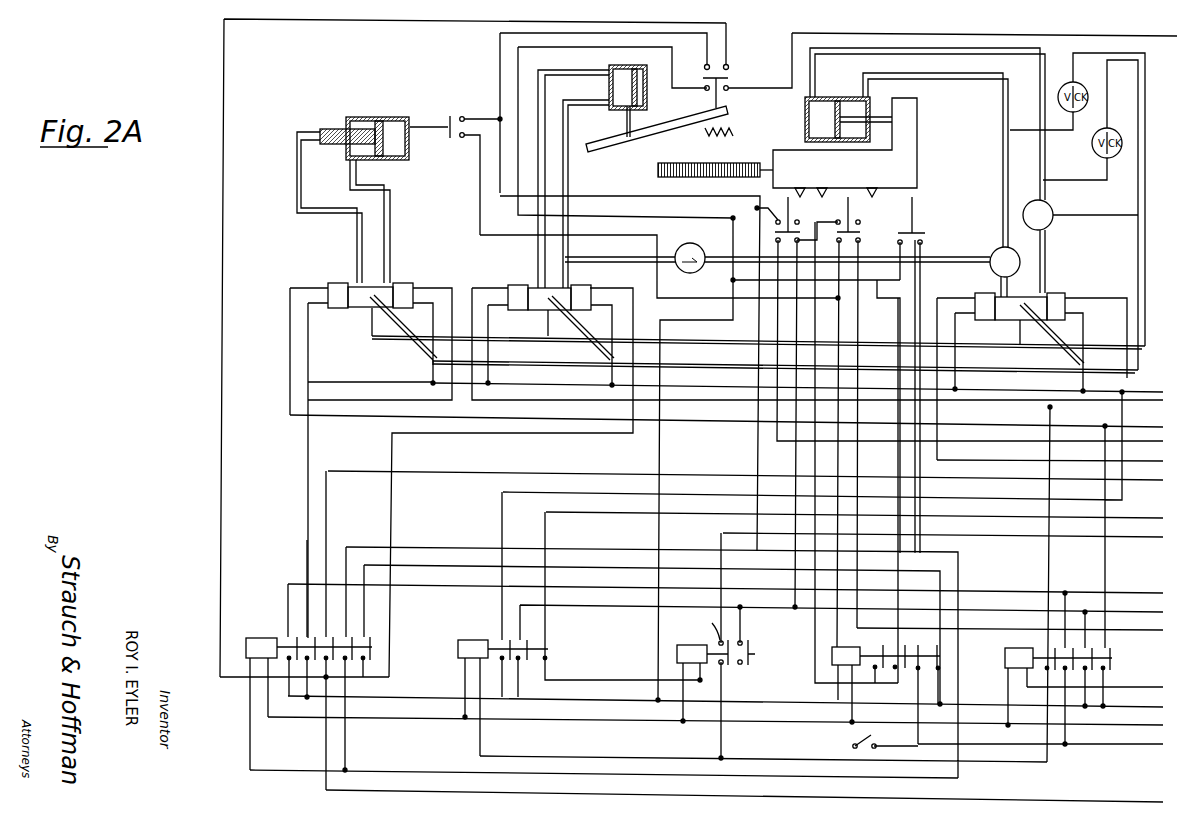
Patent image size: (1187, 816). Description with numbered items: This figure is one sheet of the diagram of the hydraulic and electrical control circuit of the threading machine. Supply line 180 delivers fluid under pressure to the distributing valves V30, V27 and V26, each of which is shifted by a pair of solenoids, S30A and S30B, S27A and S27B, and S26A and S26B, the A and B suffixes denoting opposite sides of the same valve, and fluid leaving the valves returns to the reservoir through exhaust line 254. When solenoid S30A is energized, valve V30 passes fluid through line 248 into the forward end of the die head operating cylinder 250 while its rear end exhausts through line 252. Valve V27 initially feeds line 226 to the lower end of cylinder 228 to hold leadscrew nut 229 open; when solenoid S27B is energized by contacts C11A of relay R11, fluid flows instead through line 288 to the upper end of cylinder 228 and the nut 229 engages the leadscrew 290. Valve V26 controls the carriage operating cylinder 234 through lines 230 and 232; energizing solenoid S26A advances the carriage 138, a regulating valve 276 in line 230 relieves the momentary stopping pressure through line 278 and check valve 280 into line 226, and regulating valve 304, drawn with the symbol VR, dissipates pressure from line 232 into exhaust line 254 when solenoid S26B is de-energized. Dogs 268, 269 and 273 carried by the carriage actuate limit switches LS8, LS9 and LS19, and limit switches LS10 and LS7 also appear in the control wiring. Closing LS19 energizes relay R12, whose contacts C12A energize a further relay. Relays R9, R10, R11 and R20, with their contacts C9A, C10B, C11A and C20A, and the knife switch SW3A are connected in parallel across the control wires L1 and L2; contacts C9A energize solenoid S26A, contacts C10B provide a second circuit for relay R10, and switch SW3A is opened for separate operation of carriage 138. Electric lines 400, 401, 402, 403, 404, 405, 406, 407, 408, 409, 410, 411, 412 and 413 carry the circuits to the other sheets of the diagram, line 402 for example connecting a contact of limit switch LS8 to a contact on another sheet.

The line 248 is at (297, 165).
The die head operating cylinder 250 is at (360, 117).
The line 252 is at (390, 194).
The limit switch LS10 is at (452, 114).
The line 288 is at (652, 66).
The leadscrew nut operating cylinder 228 is at (585, 179).
The line 226 is at (569, 105).
The leadscrew nut 229 is at (733, 135).
The limit switch LS7 is at (728, 78).
The line 232 is at (868, 52).
The carriage operating cylinder 234 is at (805, 120).
The line 230 is at (974, 78).
The carriage 138 is at (912, 125).
The leadscrew 290 is at (658, 172).
The dog 268 is at (792, 182).
The dog 269 is at (824, 188).
The dog 273 is at (868, 190).
The limit switch LS8 is at (797, 224).
The limit switch LS9 is at (858, 225).
The limit switch LS19 is at (915, 228).
The line 278 is at (833, 266).
The check valve 280 is at (680, 246).
The regulating valve 276 is at (995, 255).
The relief valve VR is at (1080, 222).
The regulating valve 304 is at (1047, 224).
The electric line 403 is at (1132, 33).
The distributing valve V30 is at (368, 438).
The solenoid S30A is at (338, 283).
The solenoid S30B is at (400, 283).
The distributing valve V27 is at (776, 459).
The solenoid S27B is at (516, 286).
The solenoid S27A is at (580, 285).
The distributing valve V26 is at (1032, 357).
The solenoid S26B is at (988, 298).
The solenoid S26A is at (1058, 298).
The exhaust line 254 is at (421, 346).
The supply line 180 is at (368, 326).
The wire L2 is at (1122, 392).
The wire L1 is at (1122, 707).
The electric line 400 is at (1118, 410).
The electric line 401 is at (1118, 427).
The electric line 402 is at (1118, 443).
The electric line 404 is at (1118, 461).
The electric line 405 is at (1118, 480).
The electric line 406 is at (1118, 518).
The electric line 407 is at (1118, 537).
The electric line 408 is at (1118, 593).
The electric line 409 is at (1118, 612).
The electric line 410 is at (1118, 630).
The electric line 411 is at (1118, 687).
The electric line 412 is at (1118, 744).
The electric line 413 is at (1118, 802).
The relay R12 is at (246, 648).
The contacts C12A is at (294, 635).
The relay coil R9 is at (458, 649).
The contacts C9A is at (502, 638).
The relay R10 is at (678, 646).
The contacts C10B is at (748, 666).
The relay R11 is at (832, 656).
The contacts C11A is at (875, 646).
The knife switch SW3A is at (850, 750).
The relay R20 is at (1005, 662).
The contacts C20A is at (1047, 647).